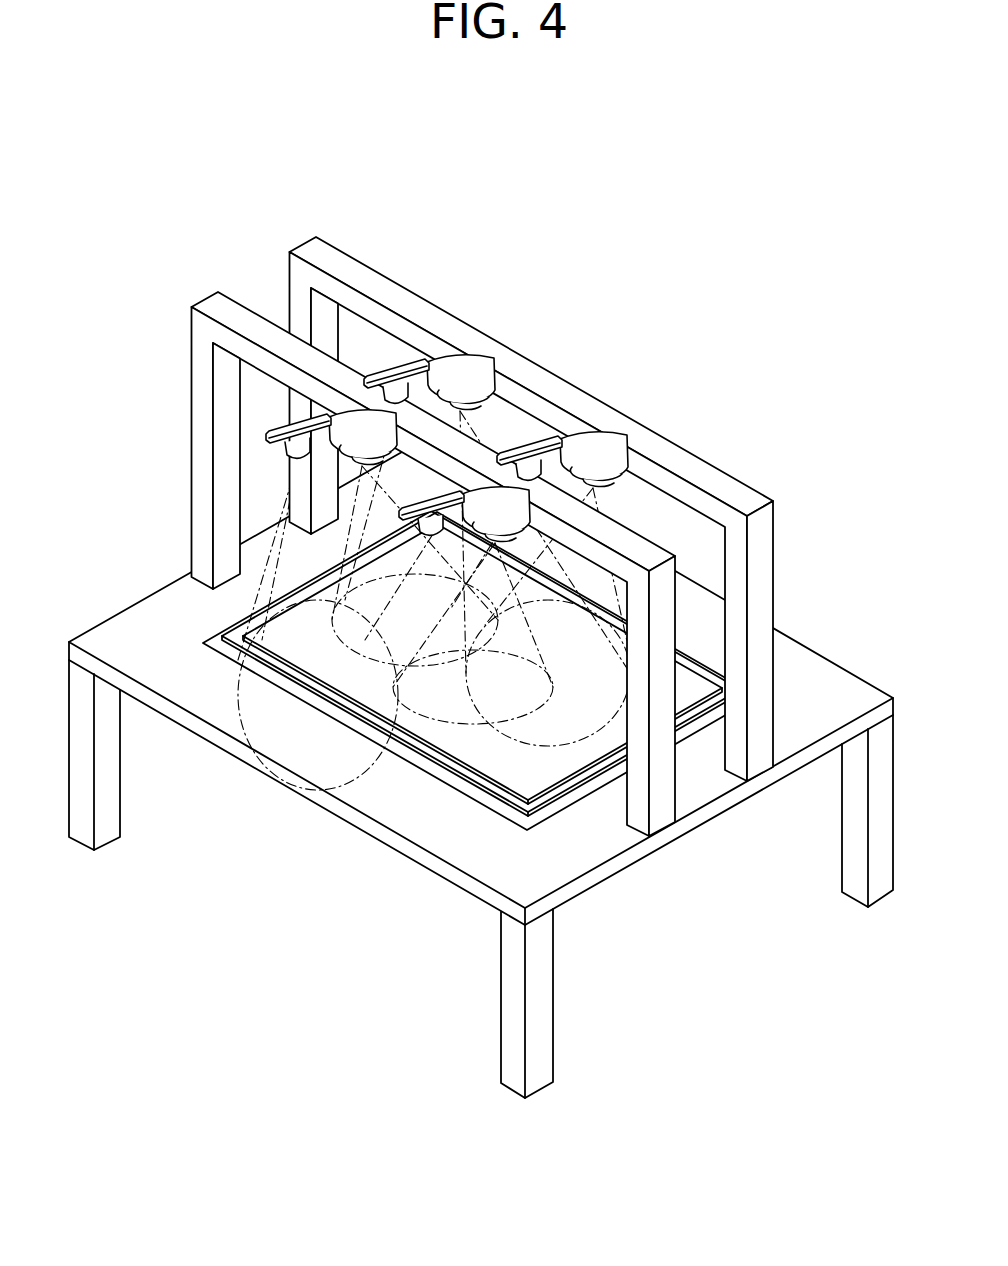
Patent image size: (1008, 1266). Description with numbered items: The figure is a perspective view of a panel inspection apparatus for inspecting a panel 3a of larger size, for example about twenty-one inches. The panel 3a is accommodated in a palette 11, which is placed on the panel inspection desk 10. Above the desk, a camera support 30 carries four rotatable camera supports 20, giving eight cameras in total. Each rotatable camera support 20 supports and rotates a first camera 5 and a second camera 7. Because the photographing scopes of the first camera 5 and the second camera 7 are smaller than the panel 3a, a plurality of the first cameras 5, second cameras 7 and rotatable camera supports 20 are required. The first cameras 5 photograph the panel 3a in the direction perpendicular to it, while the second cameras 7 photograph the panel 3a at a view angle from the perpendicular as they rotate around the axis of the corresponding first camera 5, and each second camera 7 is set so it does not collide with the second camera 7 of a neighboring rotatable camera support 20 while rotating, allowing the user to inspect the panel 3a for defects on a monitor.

The panel 3a is at (417, 712).
The first camera 5 is at (337, 487).
The second camera 7 is at (290, 460).
The panel inspection desk 10 is at (390, 846).
The palette 11 is at (333, 720).
The rotatable camera support 20 is at (370, 414).
The camera support 30 is at (673, 593).